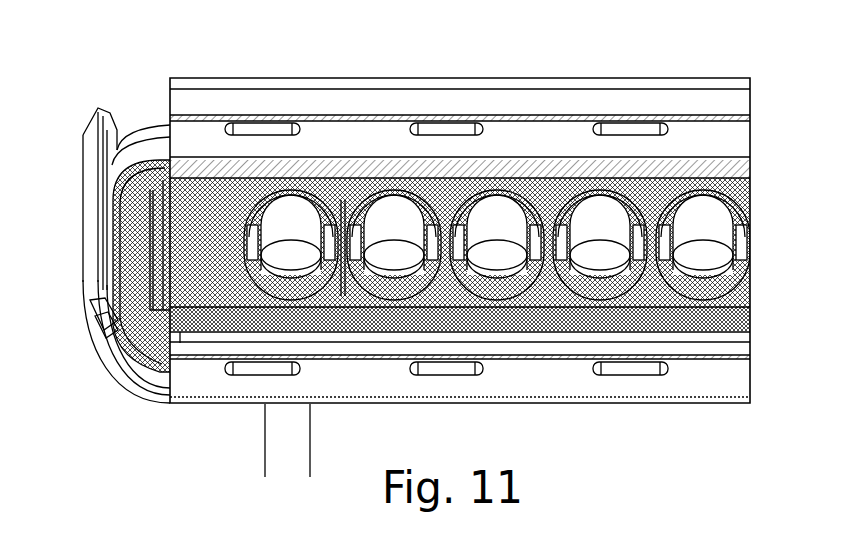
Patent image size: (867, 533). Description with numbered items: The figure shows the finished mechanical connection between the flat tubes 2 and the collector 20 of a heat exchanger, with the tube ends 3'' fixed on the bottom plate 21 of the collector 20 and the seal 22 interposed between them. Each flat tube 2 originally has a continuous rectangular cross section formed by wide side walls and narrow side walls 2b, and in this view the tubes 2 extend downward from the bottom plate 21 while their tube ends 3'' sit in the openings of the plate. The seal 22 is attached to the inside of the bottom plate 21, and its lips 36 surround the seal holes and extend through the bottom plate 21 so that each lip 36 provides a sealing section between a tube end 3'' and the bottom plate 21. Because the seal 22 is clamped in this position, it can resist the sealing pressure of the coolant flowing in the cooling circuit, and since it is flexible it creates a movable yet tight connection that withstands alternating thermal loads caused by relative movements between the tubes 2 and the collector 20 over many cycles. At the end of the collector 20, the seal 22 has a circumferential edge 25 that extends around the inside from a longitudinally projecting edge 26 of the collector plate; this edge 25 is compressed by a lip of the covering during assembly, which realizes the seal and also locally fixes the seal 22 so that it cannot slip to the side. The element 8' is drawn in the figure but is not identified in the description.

The seal 22 is at (201, 203).
The cylindrical receptacle 8' is at (285, 161).
The lip 36 is at (328, 212).
The tube end 3'' is at (431, 150).
The circumferential edge 25 is at (128, 249).
The bottom plate 21 is at (115, 394).
The collector 20 is at (126, 255).
The longitudinally projecting edge 26 is at (572, 383).
The narrow side wall 2b is at (280, 446).
The flat tube 2 is at (311, 443).